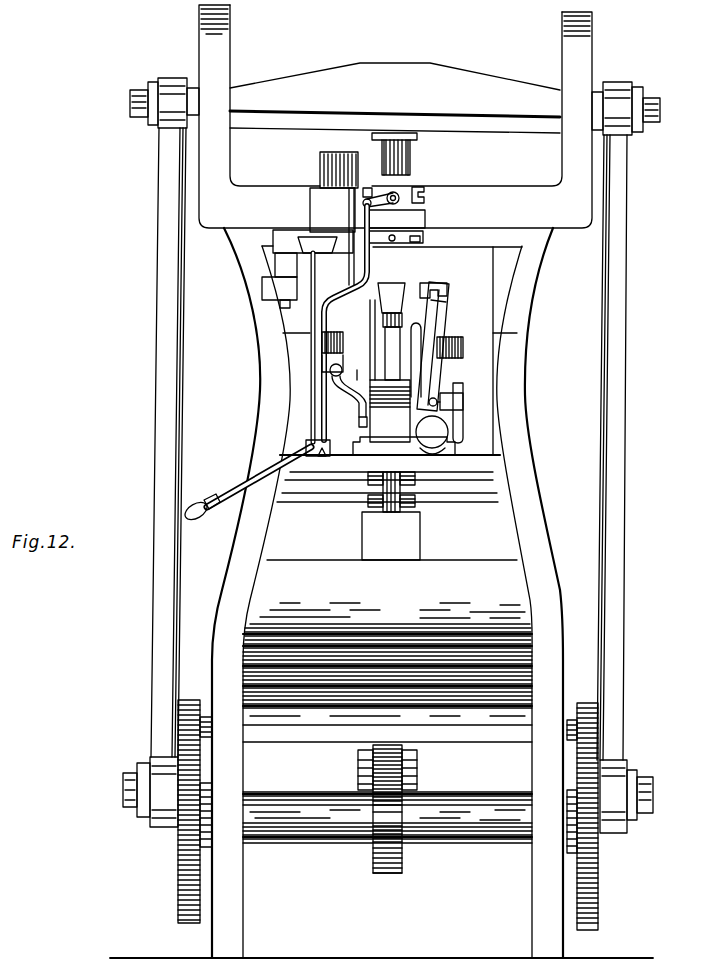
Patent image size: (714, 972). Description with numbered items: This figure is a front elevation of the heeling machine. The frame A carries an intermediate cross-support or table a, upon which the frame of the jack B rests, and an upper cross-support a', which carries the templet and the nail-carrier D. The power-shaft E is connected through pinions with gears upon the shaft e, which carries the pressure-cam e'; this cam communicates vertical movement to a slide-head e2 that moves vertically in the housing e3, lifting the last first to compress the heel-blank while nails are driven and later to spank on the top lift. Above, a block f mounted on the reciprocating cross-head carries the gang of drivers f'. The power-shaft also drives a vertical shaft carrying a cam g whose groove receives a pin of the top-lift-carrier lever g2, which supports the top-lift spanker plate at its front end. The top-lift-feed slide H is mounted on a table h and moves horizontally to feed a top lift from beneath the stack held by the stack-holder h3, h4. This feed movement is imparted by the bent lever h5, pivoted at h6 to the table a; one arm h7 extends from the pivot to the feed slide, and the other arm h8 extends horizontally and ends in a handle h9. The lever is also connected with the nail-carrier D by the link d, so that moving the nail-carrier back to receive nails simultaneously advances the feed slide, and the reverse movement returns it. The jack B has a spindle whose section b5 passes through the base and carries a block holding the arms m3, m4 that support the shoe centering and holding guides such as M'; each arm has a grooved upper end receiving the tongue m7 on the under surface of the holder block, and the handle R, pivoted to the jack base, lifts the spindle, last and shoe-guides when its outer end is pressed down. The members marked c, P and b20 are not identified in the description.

The upper cross-support a' is at (395, 116).
The frame A is at (381, 593).
The power-shaft E is at (205, 684).
The block f is at (407, 154).
The drivers f' is at (402, 158).
The nail-carrier D is at (414, 190).
The block c is at (396, 225).
The link d is at (388, 192).
The stack-holder h4 is at (323, 170).
The stack-holder h3 is at (318, 207).
The top-lift-feed slide H is at (300, 250).
The table h is at (349, 280).
The top-lift-carrier lever g2 is at (372, 275).
The arm h8 is at (268, 380).
The handle h9 is at (206, 516).
The pivot h6 is at (320, 458).
The bent lever h5 is at (314, 346).
The arm h7 is at (320, 377).
The holding-arm m3 is at (360, 373).
The handle R is at (344, 398).
The jack B is at (366, 445).
The lever P is at (430, 372).
The shoe holding guide M' is at (436, 280).
The holding-arm m4 is at (445, 316).
The cam g is at (465, 350).
The tongue m7 is at (458, 422).
The intermediate cross-support a is at (392, 507).
The jack-spindle section b5 is at (385, 496).
The block b20 is at (391, 536).
The housing e3 is at (440, 622).
The slide-head e2 is at (373, 757).
The shaft e is at (387, 817).
The pressure-cam e' is at (424, 869).